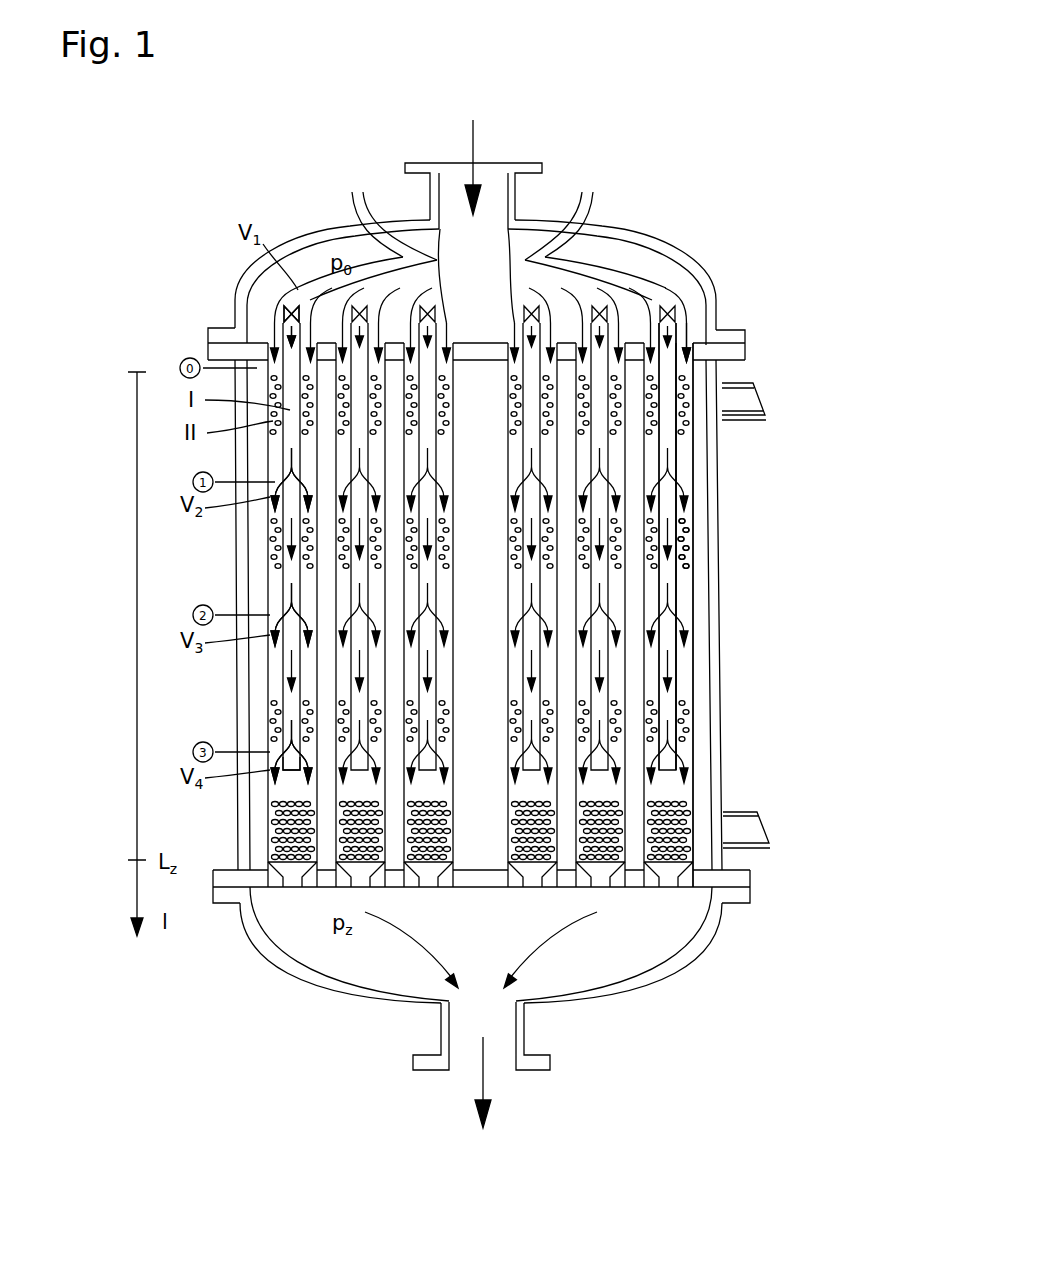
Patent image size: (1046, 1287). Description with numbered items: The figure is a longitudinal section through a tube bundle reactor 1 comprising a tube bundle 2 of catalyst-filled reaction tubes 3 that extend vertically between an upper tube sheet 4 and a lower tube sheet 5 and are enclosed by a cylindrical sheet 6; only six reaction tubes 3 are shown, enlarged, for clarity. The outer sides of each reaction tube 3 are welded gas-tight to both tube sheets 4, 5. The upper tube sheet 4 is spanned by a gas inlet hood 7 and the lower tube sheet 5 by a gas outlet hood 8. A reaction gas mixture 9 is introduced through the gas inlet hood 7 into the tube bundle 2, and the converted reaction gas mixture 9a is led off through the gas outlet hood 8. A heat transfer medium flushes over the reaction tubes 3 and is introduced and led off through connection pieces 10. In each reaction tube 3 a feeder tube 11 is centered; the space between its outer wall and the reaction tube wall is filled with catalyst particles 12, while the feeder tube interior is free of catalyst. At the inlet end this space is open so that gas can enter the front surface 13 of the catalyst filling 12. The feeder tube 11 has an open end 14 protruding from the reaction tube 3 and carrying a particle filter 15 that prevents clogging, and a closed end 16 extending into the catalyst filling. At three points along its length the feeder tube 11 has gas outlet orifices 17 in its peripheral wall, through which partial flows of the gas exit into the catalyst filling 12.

The tube bundle reactor 1 is at (500, 569).
The tube bundle 2 is at (697, 577).
The reaction tube 3 is at (688, 468).
The upper tube sheet 4 is at (697, 342).
The lower tube sheet 5 is at (633, 882).
The cylindrical sheet 6 is at (724, 690).
The gas inlet hood 7 is at (670, 257).
The gas outlet hood 8 is at (682, 975).
The reaction gas mixture 9 is at (474, 142).
The converted reaction gas mixture 9a is at (532, 946).
The connection piece 10 is at (757, 425).
The feeder tube 11 is at (668, 432).
The catalyst particles 12 is at (685, 545).
The front surface 13 is at (686, 365).
The open end 14 is at (283, 308).
The particle filter 15 is at (276, 300).
The closed end 16 is at (289, 785).
The gas outlet orifices 17 is at (280, 478).